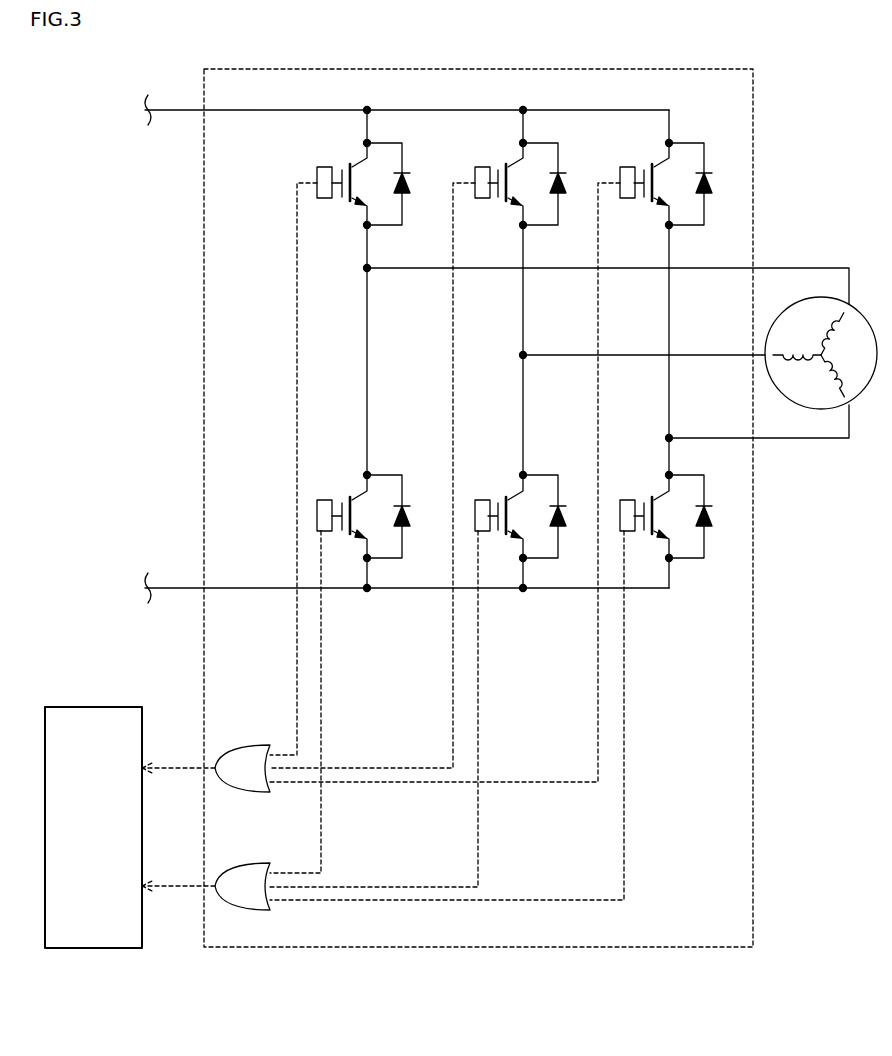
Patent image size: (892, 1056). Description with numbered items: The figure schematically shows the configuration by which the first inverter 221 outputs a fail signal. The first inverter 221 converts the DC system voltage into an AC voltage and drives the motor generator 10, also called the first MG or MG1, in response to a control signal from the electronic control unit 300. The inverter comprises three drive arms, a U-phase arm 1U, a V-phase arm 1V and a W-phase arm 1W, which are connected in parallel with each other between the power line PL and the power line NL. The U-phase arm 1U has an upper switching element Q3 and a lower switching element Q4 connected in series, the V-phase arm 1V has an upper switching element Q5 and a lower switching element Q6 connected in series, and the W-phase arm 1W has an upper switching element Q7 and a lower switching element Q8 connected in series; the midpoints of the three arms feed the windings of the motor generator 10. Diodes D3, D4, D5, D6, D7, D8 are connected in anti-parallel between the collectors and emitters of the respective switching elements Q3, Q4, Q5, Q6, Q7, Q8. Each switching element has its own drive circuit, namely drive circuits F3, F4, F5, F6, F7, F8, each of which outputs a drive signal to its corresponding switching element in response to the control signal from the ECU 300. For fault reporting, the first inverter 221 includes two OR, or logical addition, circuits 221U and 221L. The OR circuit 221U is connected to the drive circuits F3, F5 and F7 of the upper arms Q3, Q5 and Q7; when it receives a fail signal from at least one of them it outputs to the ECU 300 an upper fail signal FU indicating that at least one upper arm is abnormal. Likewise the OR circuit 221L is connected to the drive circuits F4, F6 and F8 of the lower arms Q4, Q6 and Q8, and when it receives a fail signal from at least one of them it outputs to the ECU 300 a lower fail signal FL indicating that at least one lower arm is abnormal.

The first inverter 221 is at (631, 68).
The OR circuit 221U is at (247, 745).
The OR circuit 221L is at (247, 863).
The electronic control unit 300 is at (91, 707).
The motor generator 10 is at (822, 410).
The first MG MG1 is at (821, 324).
The power line PL is at (407, 105).
The power line NL is at (407, 595).
The U-phase arm 1U is at (362, 413).
The V-phase arm 1V is at (517, 413).
The W-phase arm 1W is at (665, 413).
The switching element Q3 is at (359, 164).
The switching element Q4 is at (359, 498).
The switching element Q5 is at (515, 164).
The switching element Q6 is at (515, 498).
The switching element Q7 is at (661, 164).
The switching element Q8 is at (661, 498).
The diode D3 is at (405, 187).
The diode D4 is at (405, 520).
The diode D5 is at (561, 187).
The diode D6 is at (561, 520).
The diode D7 is at (707, 187).
The diode D8 is at (707, 520).
The drive circuit F3 is at (325, 200).
The drive circuit F4 is at (323, 498).
The drive circuit F5 is at (481, 200).
The drive circuit F6 is at (480, 498).
The drive circuit F7 is at (627, 200).
The drive circuit F8 is at (626, 498).
The upper fail signal FU is at (178, 757).
The lower fail signal FL is at (178, 878).